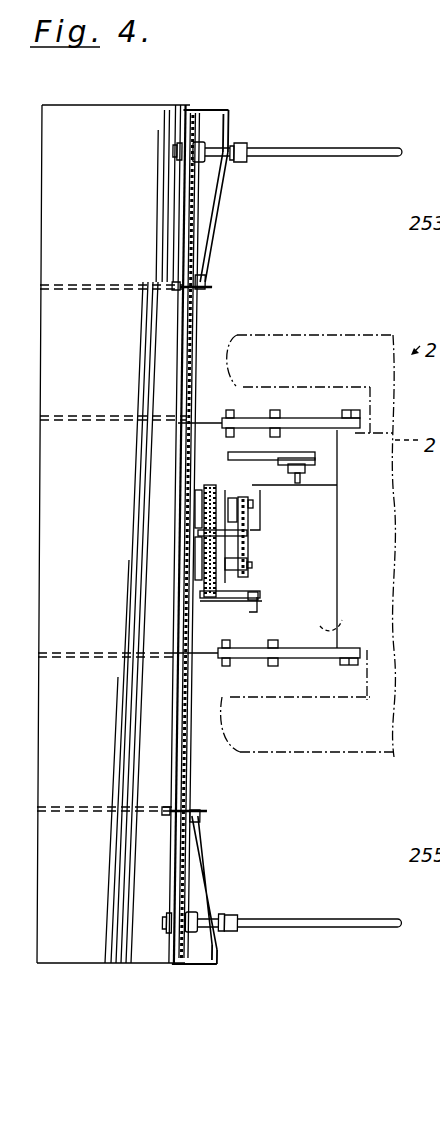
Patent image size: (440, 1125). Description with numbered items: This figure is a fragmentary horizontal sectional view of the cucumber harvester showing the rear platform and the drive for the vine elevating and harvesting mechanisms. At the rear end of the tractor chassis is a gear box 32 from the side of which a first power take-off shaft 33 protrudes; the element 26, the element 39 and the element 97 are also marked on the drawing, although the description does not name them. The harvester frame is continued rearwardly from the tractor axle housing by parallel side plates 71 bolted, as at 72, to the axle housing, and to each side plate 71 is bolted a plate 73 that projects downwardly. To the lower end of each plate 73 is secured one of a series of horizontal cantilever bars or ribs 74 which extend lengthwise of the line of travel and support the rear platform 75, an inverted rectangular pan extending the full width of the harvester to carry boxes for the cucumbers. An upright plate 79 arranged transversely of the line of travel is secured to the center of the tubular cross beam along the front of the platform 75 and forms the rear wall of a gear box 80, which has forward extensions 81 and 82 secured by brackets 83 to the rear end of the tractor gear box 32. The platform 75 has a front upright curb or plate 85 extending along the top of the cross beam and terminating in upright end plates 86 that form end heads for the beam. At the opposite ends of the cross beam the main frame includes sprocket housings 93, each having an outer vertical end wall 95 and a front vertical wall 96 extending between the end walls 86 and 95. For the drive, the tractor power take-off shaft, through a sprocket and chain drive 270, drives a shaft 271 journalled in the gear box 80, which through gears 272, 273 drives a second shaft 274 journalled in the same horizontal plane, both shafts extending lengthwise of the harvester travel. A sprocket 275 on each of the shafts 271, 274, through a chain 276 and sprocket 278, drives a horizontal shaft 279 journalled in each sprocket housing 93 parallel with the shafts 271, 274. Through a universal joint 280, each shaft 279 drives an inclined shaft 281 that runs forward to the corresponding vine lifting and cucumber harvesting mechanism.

The rear platform 75 is at (59, 105).
The channel member 97 is at (185, 180).
The chain 276 is at (186, 219).
The front upright curb or plate 85 is at (182, 347).
The horizontal cantilever bars or ribs 74 is at (80, 402).
The upright end plates 86 is at (180, 284).
The outer vertical end wall 95 is at (197, 110).
The front vertical wall 96 is at (227, 195).
The sprocket housings 93 is at (217, 224).
The sprocket 278 is at (201, 141).
The horizontal shaft 279 is at (210, 148).
The universal joint 280 is at (243, 151).
The inclined shaft 281 is at (386, 149).
The housing 26 is at (391, 340).
The plate 73 is at (248, 418).
The bolts 72 is at (350, 410).
The parallel side plates 71 is at (328, 418).
The upright plate 79 is at (203, 432).
The bar 39 is at (252, 500).
The first power take-off shaft 33 is at (301, 478).
The brackets 83 is at (263, 520).
The forward extension 81 is at (258, 540).
The sprocket and chain drive 270 is at (248, 548).
The second shaft 274 is at (182, 516).
The gear 273 is at (203, 497).
The sprocket 275 is at (184, 533).
The shaft 271 is at (181, 567).
The gear 272 is at (214, 595).
The forward extension 82 is at (261, 596).
The gear box 80 is at (216, 598).
The gear box 32 is at (344, 622).